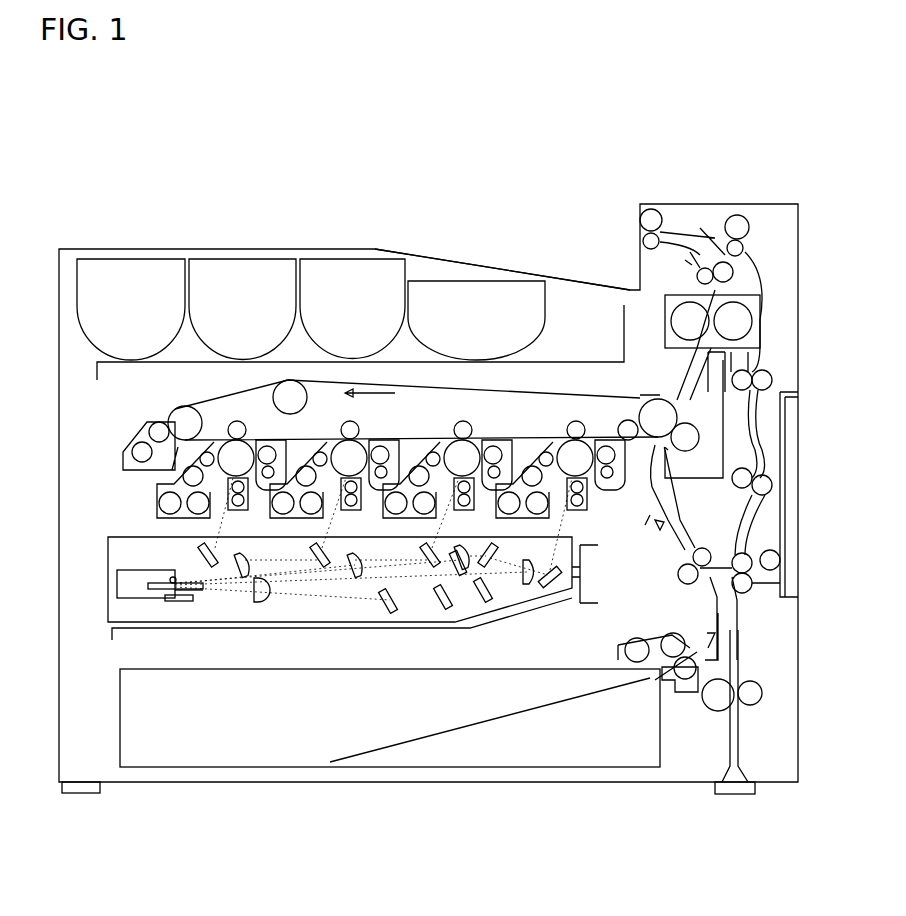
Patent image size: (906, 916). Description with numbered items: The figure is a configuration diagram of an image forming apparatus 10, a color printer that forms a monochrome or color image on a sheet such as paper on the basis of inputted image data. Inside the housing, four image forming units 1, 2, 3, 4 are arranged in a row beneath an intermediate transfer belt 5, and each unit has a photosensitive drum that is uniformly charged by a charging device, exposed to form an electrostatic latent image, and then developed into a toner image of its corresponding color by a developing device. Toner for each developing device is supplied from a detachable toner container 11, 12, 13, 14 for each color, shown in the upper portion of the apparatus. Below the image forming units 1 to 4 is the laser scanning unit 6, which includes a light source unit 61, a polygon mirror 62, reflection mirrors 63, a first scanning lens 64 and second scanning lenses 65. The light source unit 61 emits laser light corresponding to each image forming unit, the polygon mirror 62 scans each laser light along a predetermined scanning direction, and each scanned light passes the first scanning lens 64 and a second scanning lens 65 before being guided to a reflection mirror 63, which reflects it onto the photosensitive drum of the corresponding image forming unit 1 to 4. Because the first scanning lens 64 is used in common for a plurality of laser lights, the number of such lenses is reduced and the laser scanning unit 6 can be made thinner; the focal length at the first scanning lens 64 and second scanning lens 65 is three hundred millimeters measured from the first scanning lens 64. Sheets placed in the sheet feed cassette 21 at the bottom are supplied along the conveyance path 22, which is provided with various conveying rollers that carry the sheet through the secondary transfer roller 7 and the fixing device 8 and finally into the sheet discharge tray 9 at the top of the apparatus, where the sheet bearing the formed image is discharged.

The image forming apparatus 10 is at (38, 242).
The toner container 11 is at (100, 258).
The toner container 12 is at (211, 258).
The toner container 13 is at (311, 258).
The toner container 14 is at (509, 280).
The sheet discharge tray 9 is at (566, 280).
The fixing device 8 is at (760, 303).
The intermediate transfer belt 5 is at (205, 400).
The image forming unit 1 is at (257, 438).
The image forming unit 2 is at (370, 438).
The image forming unit 3 is at (483, 438).
The image forming unit 4 is at (596, 438).
The secondary transfer roller 7 is at (692, 450).
The conveyance path 22 is at (678, 565).
The sheet feed cassette 21 is at (120, 716).
The laser scanning unit 6 is at (304, 570).
The light source unit 61 is at (117, 586).
The polygon mirror 62 is at (170, 600).
The reflection mirror 63 is at (200, 555).
The first scanning lens 64 is at (258, 605).
The second scanning lens 65 is at (240, 578).